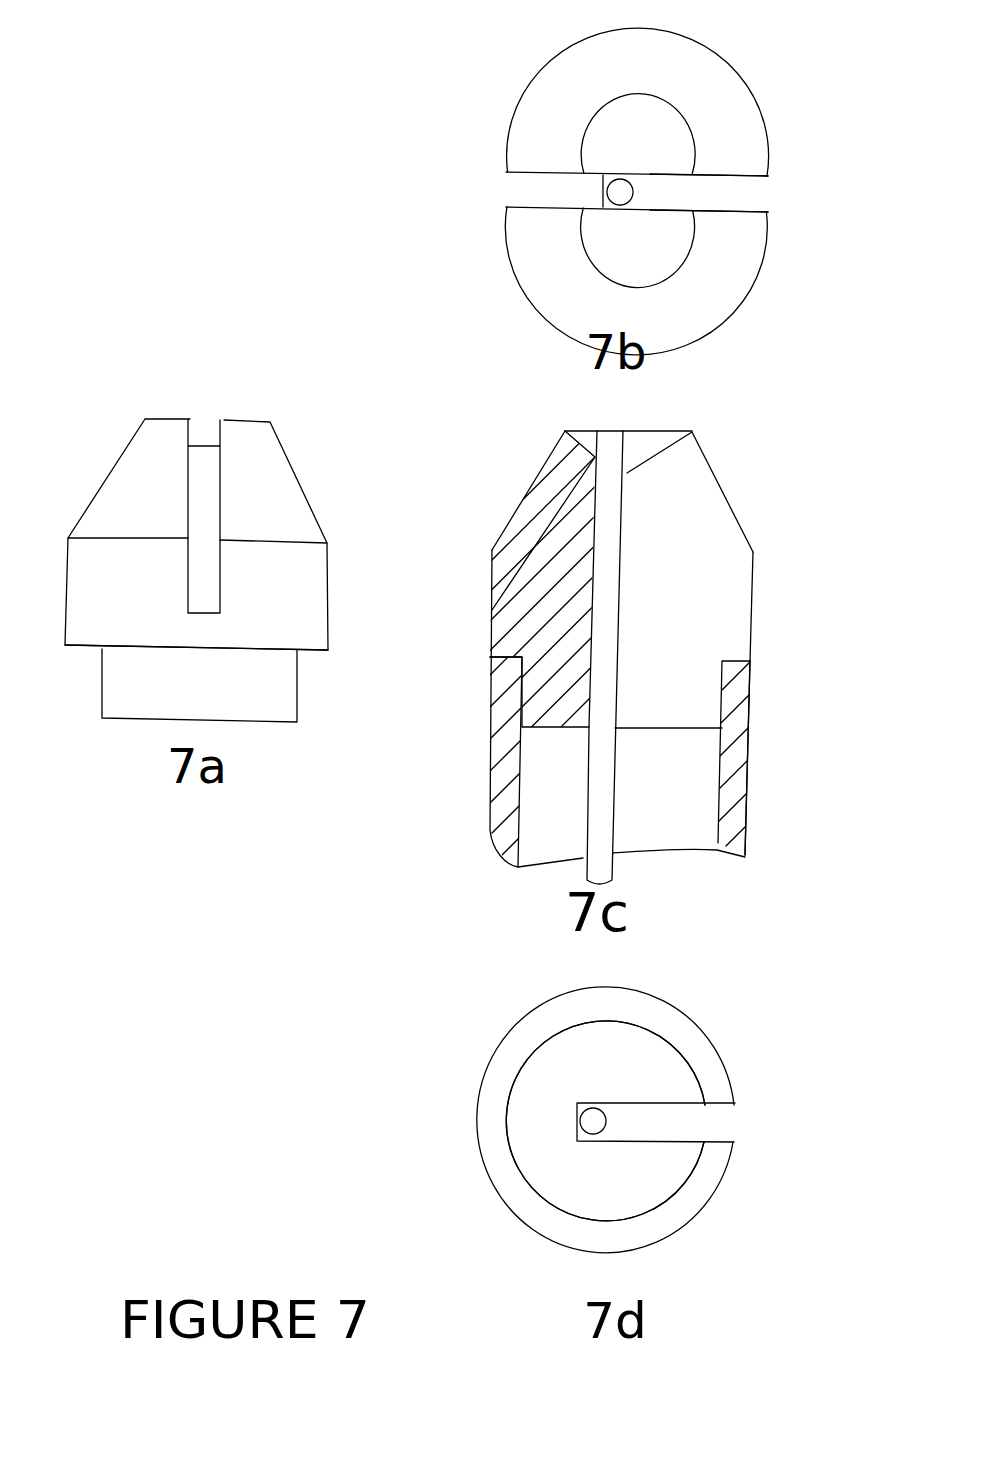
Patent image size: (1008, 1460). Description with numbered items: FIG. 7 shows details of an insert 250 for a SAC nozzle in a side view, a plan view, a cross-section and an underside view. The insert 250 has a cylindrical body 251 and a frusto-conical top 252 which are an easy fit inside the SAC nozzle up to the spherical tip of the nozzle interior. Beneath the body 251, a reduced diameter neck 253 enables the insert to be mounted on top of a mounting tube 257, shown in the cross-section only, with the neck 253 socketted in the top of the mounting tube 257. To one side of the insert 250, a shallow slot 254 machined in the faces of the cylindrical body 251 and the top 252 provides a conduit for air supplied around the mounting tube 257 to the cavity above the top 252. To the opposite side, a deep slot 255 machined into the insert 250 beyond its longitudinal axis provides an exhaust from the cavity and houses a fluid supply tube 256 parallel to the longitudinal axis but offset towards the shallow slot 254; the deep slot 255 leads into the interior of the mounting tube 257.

The insert 250 is at (280, 573).
The cylindrical body 251 is at (323, 628).
The frusto-conical top 252 is at (266, 422).
The reduced diameter neck 253 is at (227, 693).
The shallow slot 254 is at (210, 517).
The deep slot 255 is at (723, 182).
The fluid supply tube 256 is at (612, 185).
The mounting tube 257 is at (752, 721).